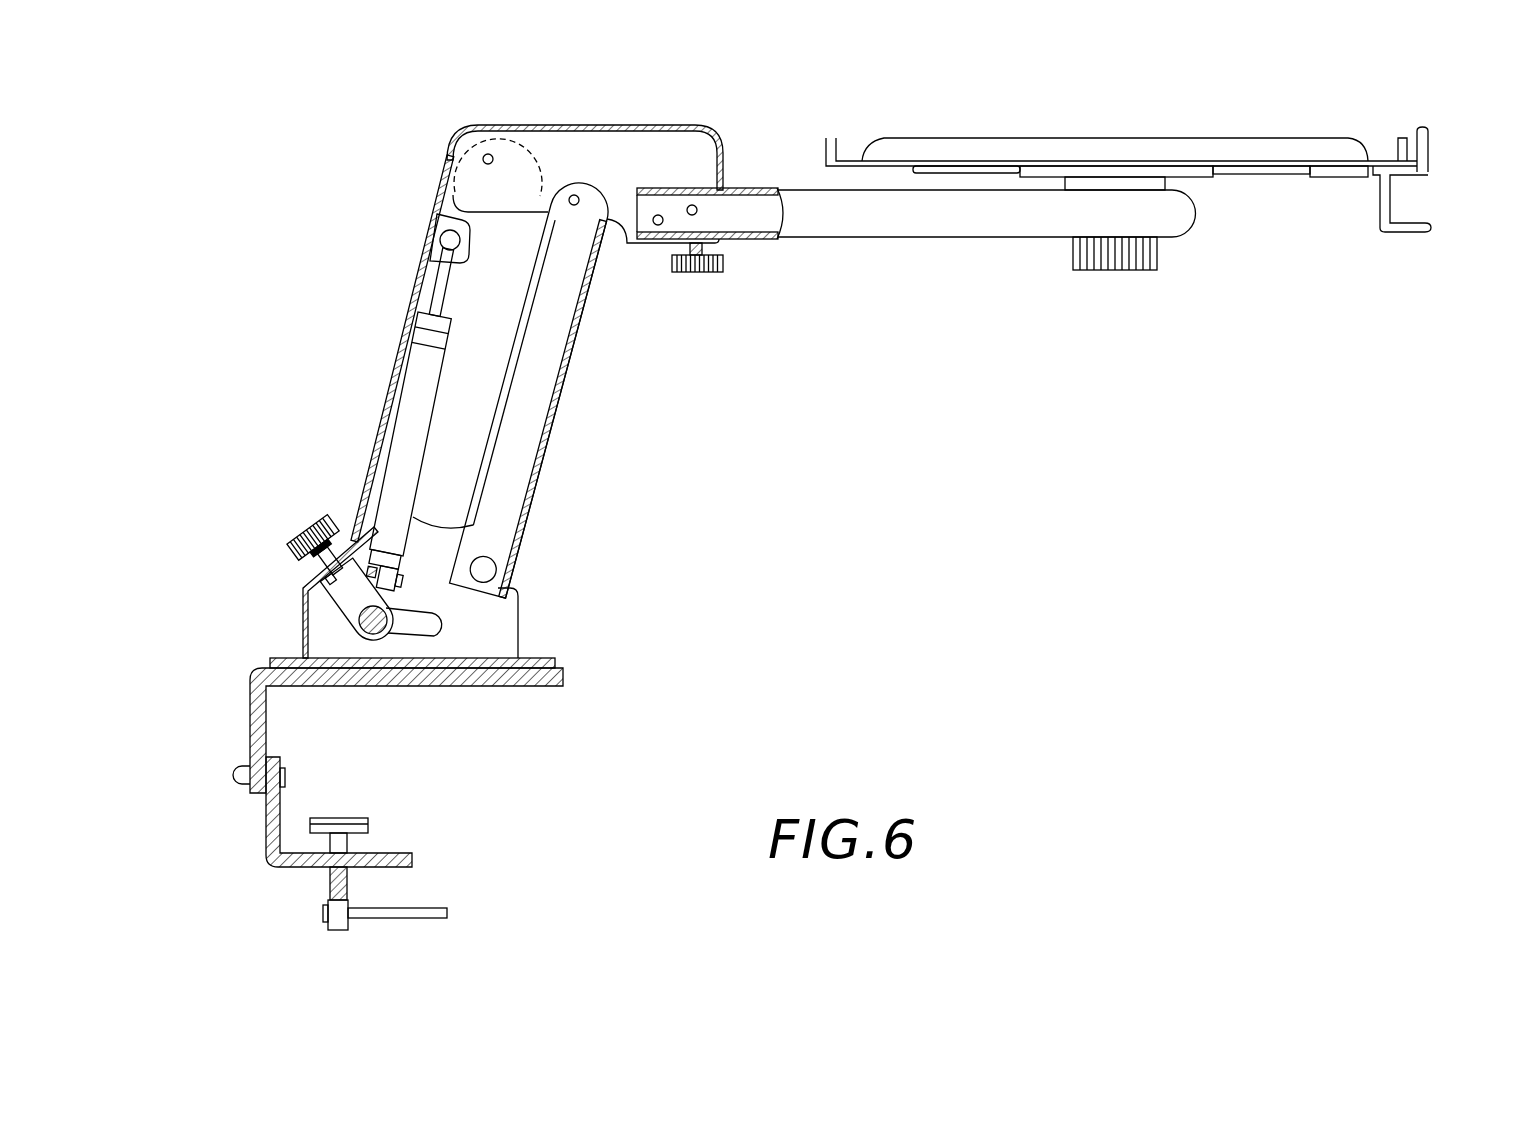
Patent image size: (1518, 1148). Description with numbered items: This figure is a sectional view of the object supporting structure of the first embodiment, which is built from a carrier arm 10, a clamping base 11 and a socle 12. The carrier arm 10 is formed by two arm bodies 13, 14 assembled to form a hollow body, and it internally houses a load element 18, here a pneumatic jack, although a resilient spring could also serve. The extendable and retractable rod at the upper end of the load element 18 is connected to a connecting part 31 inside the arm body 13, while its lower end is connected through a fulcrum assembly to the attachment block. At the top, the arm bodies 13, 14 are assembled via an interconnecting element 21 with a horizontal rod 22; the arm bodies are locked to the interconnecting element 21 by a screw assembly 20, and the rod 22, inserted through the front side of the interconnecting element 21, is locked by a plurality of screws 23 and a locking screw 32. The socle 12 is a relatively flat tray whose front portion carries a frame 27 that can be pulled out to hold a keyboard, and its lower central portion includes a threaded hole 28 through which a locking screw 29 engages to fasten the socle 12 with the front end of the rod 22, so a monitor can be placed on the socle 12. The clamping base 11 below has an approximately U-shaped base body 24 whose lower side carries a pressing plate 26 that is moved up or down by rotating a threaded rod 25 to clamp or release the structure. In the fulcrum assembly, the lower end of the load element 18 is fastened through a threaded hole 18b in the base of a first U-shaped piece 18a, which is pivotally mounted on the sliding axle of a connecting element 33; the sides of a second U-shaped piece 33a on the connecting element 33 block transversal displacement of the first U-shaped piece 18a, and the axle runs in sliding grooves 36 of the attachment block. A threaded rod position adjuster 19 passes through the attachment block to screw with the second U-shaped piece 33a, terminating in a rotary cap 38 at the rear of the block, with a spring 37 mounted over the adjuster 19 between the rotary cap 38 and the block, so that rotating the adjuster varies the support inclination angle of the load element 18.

The carrier arm 10 is at (346, 297).
The clamping base 11 is at (262, 654).
The socle 12 is at (1270, 152).
The arm body 13 is at (396, 374).
The arm body 14 is at (547, 476).
The load element 18 is at (408, 422).
The first U-shaped piece 18a is at (457, 600).
The threaded hole 18b is at (358, 525).
The threaded rod position adjuster 19 is at (318, 574).
The screw assembly 20 is at (569, 202).
The interconnecting element 21 is at (456, 134).
The horizontal rod 22 is at (754, 188).
The screws 23 is at (690, 216).
The base body 24 is at (265, 830).
The threaded rod 25 is at (330, 926).
The pressing plate 26 is at (360, 822).
The frame 27 is at (1410, 172).
The threaded hole 28 is at (1198, 178).
The locking screw 29 is at (1115, 271).
The connecting part 31 is at (437, 248).
The locking screw 32 is at (700, 274).
The connecting element 33 is at (358, 626).
The second U-shaped piece 33a is at (342, 594).
The sliding grooves 36 is at (430, 629).
The spring 37 is at (318, 523).
The rotary cap 38 is at (303, 550).